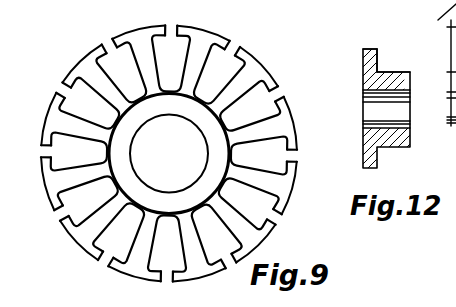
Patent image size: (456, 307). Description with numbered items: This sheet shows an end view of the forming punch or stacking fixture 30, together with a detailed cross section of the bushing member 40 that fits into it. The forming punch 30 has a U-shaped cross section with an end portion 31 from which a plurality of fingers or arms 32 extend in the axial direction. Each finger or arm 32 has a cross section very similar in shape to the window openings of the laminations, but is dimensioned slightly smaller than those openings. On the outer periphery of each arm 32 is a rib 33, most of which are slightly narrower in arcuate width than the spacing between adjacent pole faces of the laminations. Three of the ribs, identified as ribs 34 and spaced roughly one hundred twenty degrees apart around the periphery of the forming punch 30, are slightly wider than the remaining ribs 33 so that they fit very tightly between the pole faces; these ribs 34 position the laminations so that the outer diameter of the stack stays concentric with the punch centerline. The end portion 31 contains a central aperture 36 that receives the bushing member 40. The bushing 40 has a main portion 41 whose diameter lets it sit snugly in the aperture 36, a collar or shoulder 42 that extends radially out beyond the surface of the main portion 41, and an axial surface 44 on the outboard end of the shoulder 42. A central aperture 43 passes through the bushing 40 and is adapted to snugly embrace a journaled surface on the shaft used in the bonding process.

In FIG. 9, the forming punch 30 is at (57, 69).
In FIG. 9, the end portion 31 is at (183, 108).
In FIG. 9, the fingers or arms 32 is at (246, 66).
In FIG. 9, the rib 33 is at (103, 44).
In FIG. 9, the ribs 34 is at (174, 27).
In FIG. 9, the central aperture 36 is at (141, 177).
In FIG. 12, the bushing member 40 is at (382, 113).
In FIG. 12, the main portion 41 is at (405, 72).
In FIG. 12, the collar or shoulder 42 is at (370, 49).
In FIG. 12, the central aperture 43 is at (372, 125).
In FIG. 12, the axial surface 44 is at (379, 62).